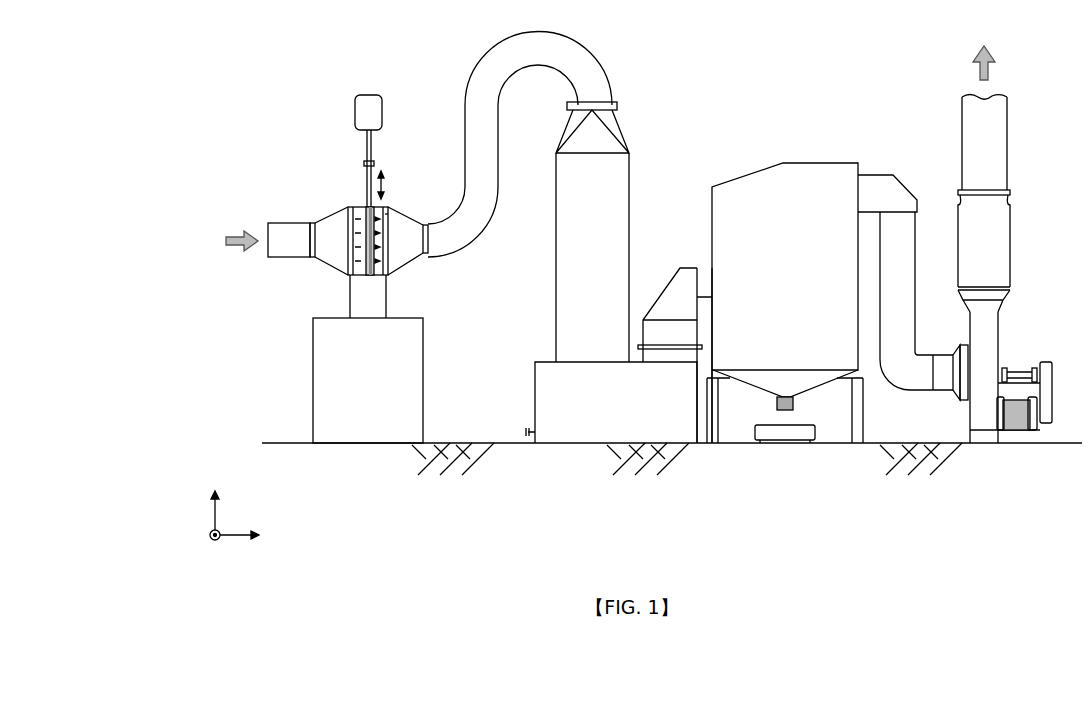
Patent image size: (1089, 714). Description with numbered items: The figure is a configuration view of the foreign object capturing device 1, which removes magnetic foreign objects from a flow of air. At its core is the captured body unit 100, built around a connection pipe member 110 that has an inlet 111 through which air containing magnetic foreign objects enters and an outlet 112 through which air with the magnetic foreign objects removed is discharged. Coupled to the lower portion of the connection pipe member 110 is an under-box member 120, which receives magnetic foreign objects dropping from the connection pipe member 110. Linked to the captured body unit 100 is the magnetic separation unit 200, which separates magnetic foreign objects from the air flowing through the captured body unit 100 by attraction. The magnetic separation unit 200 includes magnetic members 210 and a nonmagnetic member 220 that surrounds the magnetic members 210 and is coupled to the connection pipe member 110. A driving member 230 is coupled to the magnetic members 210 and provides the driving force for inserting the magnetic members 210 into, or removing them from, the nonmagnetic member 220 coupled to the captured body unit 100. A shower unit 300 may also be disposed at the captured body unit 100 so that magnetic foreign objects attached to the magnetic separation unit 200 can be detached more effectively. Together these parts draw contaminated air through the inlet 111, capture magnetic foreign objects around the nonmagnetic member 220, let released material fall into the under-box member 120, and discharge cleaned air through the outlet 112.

The foreign object capturing device 1 is at (394, 23).
The captured body unit 100 is at (232, 280).
The connection pipe member 110 is at (340, 218).
The inlet 111 is at (312, 235).
The outlet 112 is at (372, 270).
The under-box member 120 is at (313, 366).
The magnetic separation unit 200 is at (276, 112).
The magnetic members 210 is at (366, 173).
The nonmagnetic member 220 is at (366, 207).
The driving member 230 is at (355, 116).
The shower unit 300 is at (386, 217).